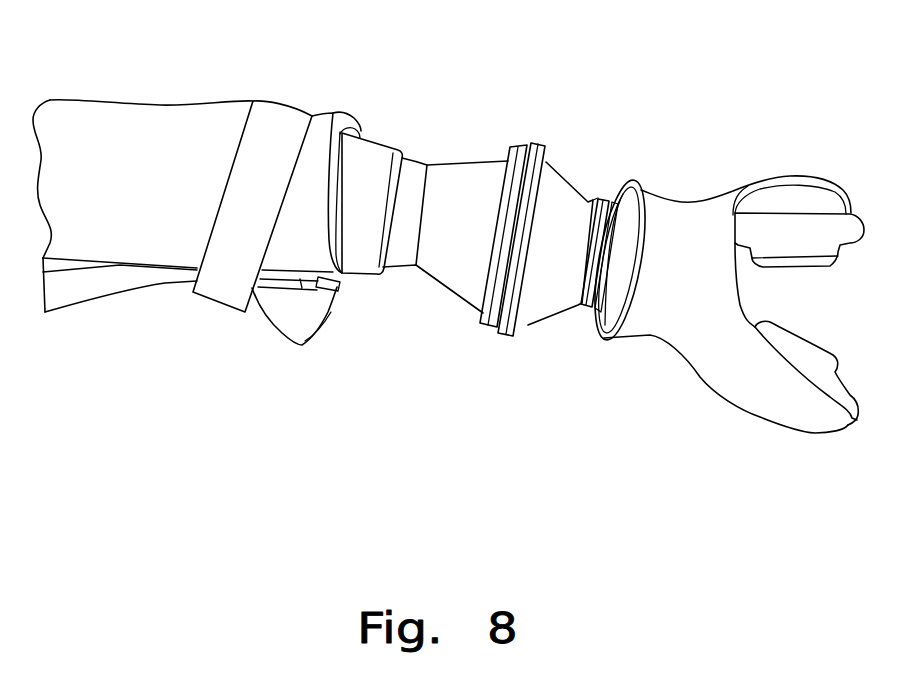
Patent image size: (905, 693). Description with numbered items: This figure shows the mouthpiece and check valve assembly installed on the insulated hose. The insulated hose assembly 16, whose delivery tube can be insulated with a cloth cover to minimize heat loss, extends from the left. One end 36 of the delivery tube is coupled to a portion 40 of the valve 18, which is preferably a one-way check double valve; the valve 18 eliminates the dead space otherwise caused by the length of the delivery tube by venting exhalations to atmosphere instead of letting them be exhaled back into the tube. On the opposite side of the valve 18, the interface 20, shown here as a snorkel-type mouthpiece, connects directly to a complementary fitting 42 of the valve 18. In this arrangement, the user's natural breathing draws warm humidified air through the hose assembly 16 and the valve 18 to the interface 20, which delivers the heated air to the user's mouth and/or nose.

The insulated hose assembly 16 is at (130, 112).
The valve 18 is at (483, 348).
The interface 20 is at (733, 380).
The end of the delivery tube 36 is at (370, 160).
The portion of the valve 40 is at (427, 265).
The complementary fitting 42 is at (607, 197).